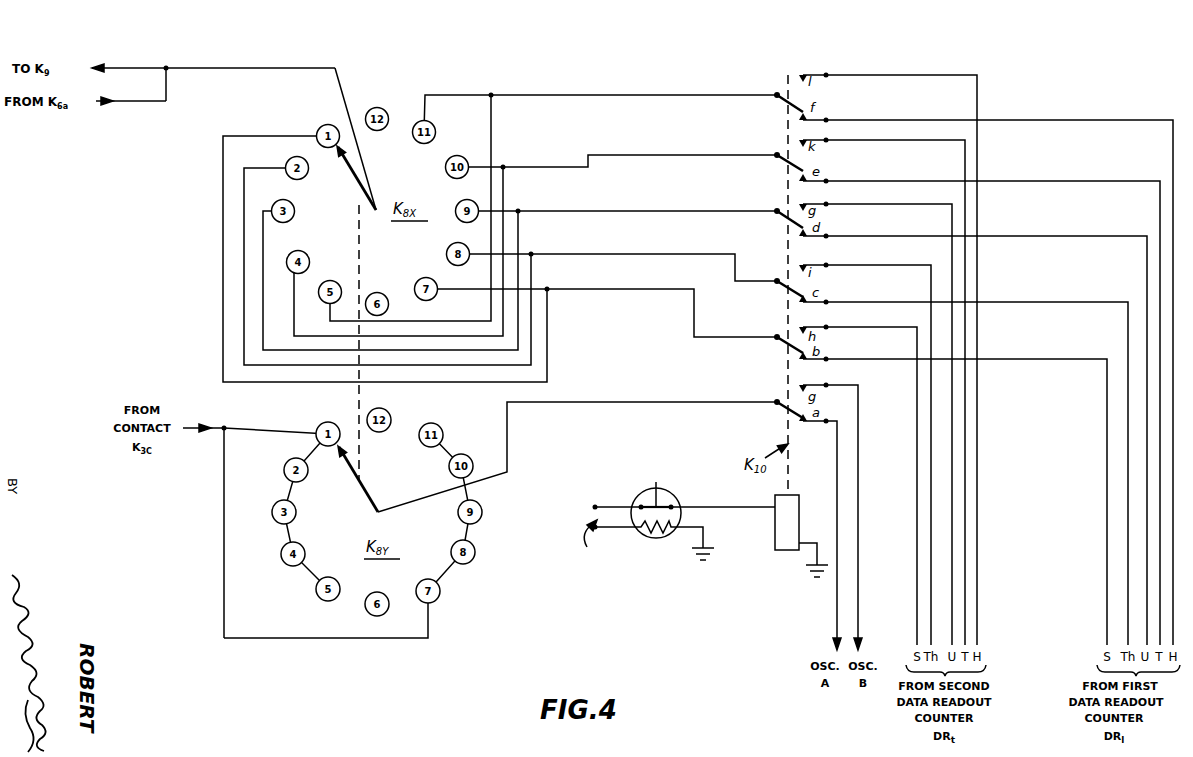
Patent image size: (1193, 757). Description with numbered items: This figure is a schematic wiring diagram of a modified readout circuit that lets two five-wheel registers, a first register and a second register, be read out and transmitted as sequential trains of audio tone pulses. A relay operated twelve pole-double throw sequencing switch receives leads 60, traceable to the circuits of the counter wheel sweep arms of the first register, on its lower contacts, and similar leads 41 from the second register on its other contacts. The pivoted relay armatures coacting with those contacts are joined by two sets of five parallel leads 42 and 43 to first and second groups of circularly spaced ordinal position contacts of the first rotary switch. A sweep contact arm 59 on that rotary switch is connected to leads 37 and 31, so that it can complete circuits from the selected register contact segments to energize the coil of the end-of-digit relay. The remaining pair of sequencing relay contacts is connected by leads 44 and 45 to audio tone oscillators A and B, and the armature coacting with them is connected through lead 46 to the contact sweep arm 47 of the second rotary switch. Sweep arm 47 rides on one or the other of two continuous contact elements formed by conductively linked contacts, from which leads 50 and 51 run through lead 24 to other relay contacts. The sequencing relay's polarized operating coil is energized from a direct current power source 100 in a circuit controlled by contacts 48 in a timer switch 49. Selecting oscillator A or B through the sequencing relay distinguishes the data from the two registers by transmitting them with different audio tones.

The lead 24 is at (223, 426).
The lead 31 is at (234, 67).
The lead 37 is at (243, 136).
The leads 41 is at (931, 512).
The parallel leads 42 is at (329, 317).
The parallel leads 43 is at (610, 97).
The lead 44 is at (835, 620).
The lead 45 is at (882, 611).
The lead 46 is at (617, 403).
The contact sweep arm 47 is at (354, 480).
The contacts 48 is at (664, 502).
The timer switch 49 is at (665, 536).
The lead 50 is at (291, 428).
The lead 51 is at (330, 639).
The sweep contact arm 59 is at (356, 176).
The leads 60 is at (1159, 490).
The DC power source 100 is at (592, 570).